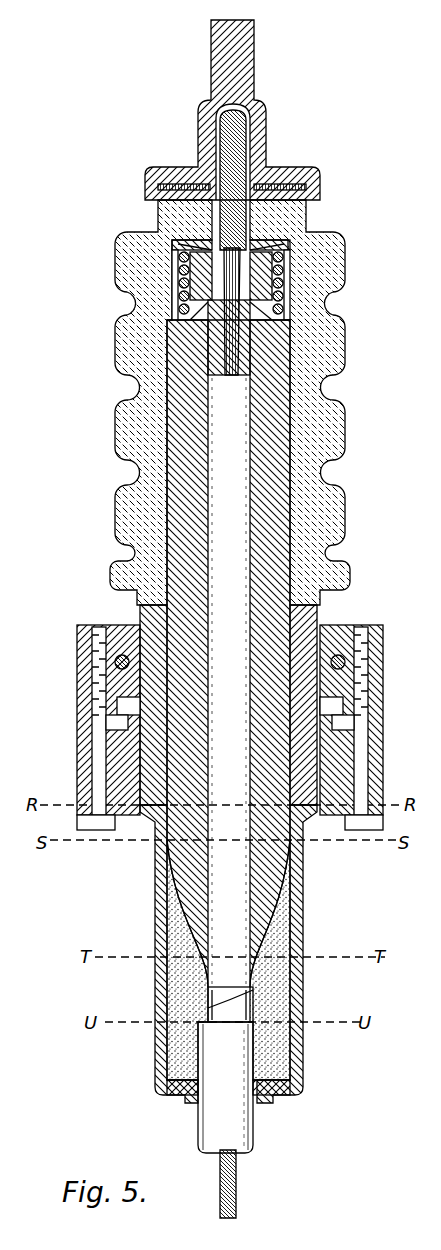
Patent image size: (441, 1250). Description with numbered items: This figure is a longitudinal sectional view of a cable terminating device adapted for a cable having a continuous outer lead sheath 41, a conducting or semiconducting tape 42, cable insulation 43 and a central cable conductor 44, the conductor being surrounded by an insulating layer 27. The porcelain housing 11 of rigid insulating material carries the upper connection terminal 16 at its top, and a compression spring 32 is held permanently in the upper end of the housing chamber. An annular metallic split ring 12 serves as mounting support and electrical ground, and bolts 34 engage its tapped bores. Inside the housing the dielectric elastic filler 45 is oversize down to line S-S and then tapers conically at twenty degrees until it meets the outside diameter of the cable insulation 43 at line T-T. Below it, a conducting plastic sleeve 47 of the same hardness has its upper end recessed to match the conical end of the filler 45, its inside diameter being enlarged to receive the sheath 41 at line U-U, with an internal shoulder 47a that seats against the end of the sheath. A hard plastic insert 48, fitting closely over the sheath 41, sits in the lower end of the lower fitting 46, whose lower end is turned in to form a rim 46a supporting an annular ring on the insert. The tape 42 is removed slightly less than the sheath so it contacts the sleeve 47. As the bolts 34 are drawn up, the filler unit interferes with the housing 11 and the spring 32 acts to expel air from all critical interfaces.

The upper connection terminal 16 is at (226, 72).
The insulating layer 27 is at (233, 134).
The compression spring 32 is at (297, 281).
The housing member 11 is at (138, 337).
The elastic filler 45 is at (186, 489).
The annular metallic split ring 12 is at (84, 664).
The bolts 34 is at (108, 725).
The lower fitting 46 is at (303, 906).
The conducting plastic sleeve 47 is at (182, 990).
The cable insulation 43 is at (250, 977).
The conducting tape 42 is at (240, 1003).
The shoulder 47a is at (214, 1022).
The hard plastic insert 48 is at (185, 1090).
The rim 46a is at (278, 1099).
The outer lead sheath 41 is at (250, 1125).
The central cable conductor 44 is at (238, 1186).